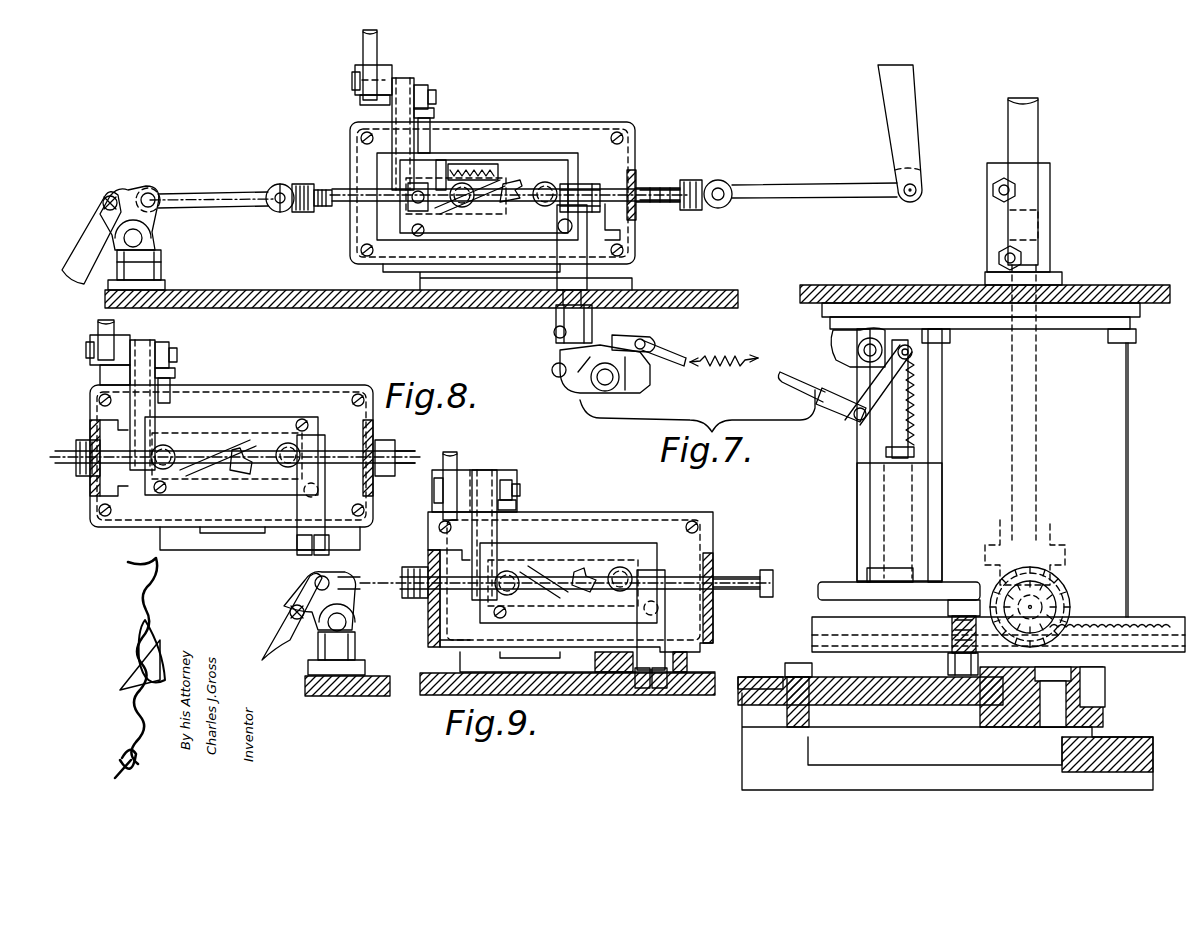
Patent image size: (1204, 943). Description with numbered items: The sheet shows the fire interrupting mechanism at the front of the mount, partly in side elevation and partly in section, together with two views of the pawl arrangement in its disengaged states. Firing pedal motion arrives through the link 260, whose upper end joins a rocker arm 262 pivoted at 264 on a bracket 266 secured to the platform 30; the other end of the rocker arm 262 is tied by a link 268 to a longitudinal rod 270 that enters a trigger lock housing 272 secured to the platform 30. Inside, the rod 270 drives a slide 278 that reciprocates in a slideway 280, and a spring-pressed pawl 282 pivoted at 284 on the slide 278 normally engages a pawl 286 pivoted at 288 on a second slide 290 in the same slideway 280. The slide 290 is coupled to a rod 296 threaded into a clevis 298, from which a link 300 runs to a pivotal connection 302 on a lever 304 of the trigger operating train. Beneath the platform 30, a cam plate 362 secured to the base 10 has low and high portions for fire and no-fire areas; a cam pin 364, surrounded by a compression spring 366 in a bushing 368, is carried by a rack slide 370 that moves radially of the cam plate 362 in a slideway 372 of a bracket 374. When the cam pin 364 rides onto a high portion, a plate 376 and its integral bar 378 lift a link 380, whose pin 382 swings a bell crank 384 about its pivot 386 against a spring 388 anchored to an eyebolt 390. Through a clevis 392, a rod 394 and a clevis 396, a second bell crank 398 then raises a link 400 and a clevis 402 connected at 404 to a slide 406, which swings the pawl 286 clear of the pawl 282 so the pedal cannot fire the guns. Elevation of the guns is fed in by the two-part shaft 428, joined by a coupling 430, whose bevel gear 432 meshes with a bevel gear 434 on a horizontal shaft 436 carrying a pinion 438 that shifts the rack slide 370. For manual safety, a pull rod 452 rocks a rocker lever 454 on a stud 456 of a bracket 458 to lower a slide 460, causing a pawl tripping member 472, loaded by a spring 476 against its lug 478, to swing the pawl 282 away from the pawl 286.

In FIG. 7, the base 10 is at (742, 762).
In FIG. 7, the platform 30 is at (205, 290).
In FIG. 9, the platform 30 is at (335, 696).
In FIG. 7, the link 260 is at (95, 232).
In FIG. 9, the link 260 is at (280, 616).
In FIG. 7, the rocker arm 262 is at (131, 192).
In FIG. 9, the rocker arm 262 is at (350, 590).
In FIG. 7, the pivot 264 is at (143, 238).
In FIG. 7, the bracket 266 is at (150, 266).
In FIG. 7, the link 268 is at (202, 194).
In FIG. 9, the link 268 is at (350, 576).
In FIG. 7, the longitudinal rod 270 is at (305, 192).
In FIG. 8, the longitudinal rod 270 is at (72, 448).
In FIG. 9, the longitudinal rod 270 is at (410, 575).
In FIG. 7, the trigger lock housing 272 is at (568, 135).
In FIG. 7, the slide 278 is at (418, 210).
In FIG. 7, the slideway 280 is at (522, 158).
In FIG. 8, the slideway 280 is at (235, 423).
In FIG. 9, the slideway 280 is at (568, 583).
In FIG. 7, the spring-pressed pawl 282 is at (485, 196).
In FIG. 8, the spring-pressed pawl 282 is at (210, 470).
In FIG. 9, the spring-pressed pawl 282 is at (550, 575).
In FIG. 7, the pivot 284 is at (462, 208).
In FIG. 8, the pivot 284 is at (172, 470).
In FIG. 9, the pivot 284 is at (520, 594).
In FIG. 7, the pawl 286 is at (522, 204).
In FIG. 8, the pawl 286 is at (248, 462).
In FIG. 9, the pawl 286 is at (590, 582).
In FIG. 7, the pivot 288 is at (543, 182).
In FIG. 8, the pivot 288 is at (286, 468).
In FIG. 9, the pivot 288 is at (616, 592).
In FIG. 7, the slide 290 is at (590, 182).
In FIG. 7, the longitudinally extending rod 296 is at (664, 186).
In FIG. 8, the longitudinally extending rod 296 is at (410, 450).
In FIG. 9, the longitudinally extending rod 296 is at (742, 577).
In FIG. 7, the clevis 298 is at (710, 182).
In FIG. 7, the link 300 is at (792, 186).
In FIG. 7, the pivotal connection 302 is at (926, 190).
In FIG. 7, the lever 304 is at (915, 128).
In FIG. 7, the cam plate 362 is at (860, 700).
In FIG. 7, the cam pin 364 is at (955, 660).
In FIG. 7, the compression spring 366 is at (948, 645).
In FIG. 7, the bushing 368 is at (978, 662).
In FIG. 7, the rack slide 370 is at (1152, 615).
In FIG. 7, the slideway 372 is at (1150, 652).
In FIG. 7, the bracket 374 is at (1128, 490).
In FIG. 7, the plate 376 is at (902, 592).
In FIG. 7, the bar 378 is at (912, 510).
In FIG. 7, the link 380 is at (880, 405).
In FIG. 7, the pin 382 is at (912, 352).
In FIG. 7, the bell crank 384 is at (858, 348).
In FIG. 7, the pivot 386 is at (840, 334).
In FIG. 7, the spring 388 is at (916, 395).
In FIG. 7, the eyebolt 390 is at (914, 454).
In FIG. 7, the clevis 392 is at (830, 388).
In FIG. 7, the rod 394 is at (768, 364).
In FIG. 7, the clevis 396 is at (648, 344).
In FIG. 7, the bell crank 398 is at (618, 390).
In FIG. 7, the link 400 is at (552, 368).
In FIG. 7, the clevis 402 is at (554, 332).
In FIG. 8, the clevis 402 is at (300, 555).
In FIG. 9, the clevis 402 is at (645, 689).
In FIG. 7, the connection 404 is at (556, 312).
In FIG. 7, the slide 406 is at (558, 246).
In FIG. 8, the slide 406 is at (297, 508).
In FIG. 9, the slide 406 is at (637, 634).
In FIG. 7, the two-part shaft 428 is at (1038, 138).
In FIG. 7, the coupling 430 is at (1050, 224).
In FIG. 7, the bevel gear 432 is at (1040, 568).
In FIG. 7, the bevel gear 434 is at (1050, 585).
In FIG. 7, the horizontal shaft 436 is at (1056, 598).
In FIG. 7, the pinion 438 is at (1045, 607).
In FIG. 7, the pull rod 452 is at (378, 44).
In FIG. 8, the pull rod 452 is at (98, 326).
In FIG. 9, the pull rod 452 is at (456, 456).
In FIG. 7, the rocker lever 454 is at (358, 110).
In FIG. 8, the rocker lever 454 is at (98, 368).
In FIG. 9, the rocker lever 454 is at (468, 476).
In FIG. 7, the stud 456 is at (440, 98).
In FIG. 8, the stud 456 is at (178, 358).
In FIG. 9, the stud 456 is at (520, 488).
In FIG. 7, the bracket 458 is at (436, 114).
In FIG. 8, the bracket 458 is at (176, 382).
In FIG. 9, the bracket 458 is at (516, 505).
In FIG. 7, the slide 460 is at (405, 84).
In FIG. 8, the slide 460 is at (156, 404).
In FIG. 9, the slide 460 is at (498, 478).
In FIG. 7, the pawl tripping member 472 is at (424, 211).
In FIG. 7, the spring 476 is at (470, 162).
In FIG. 7, the lug 478 is at (440, 158).